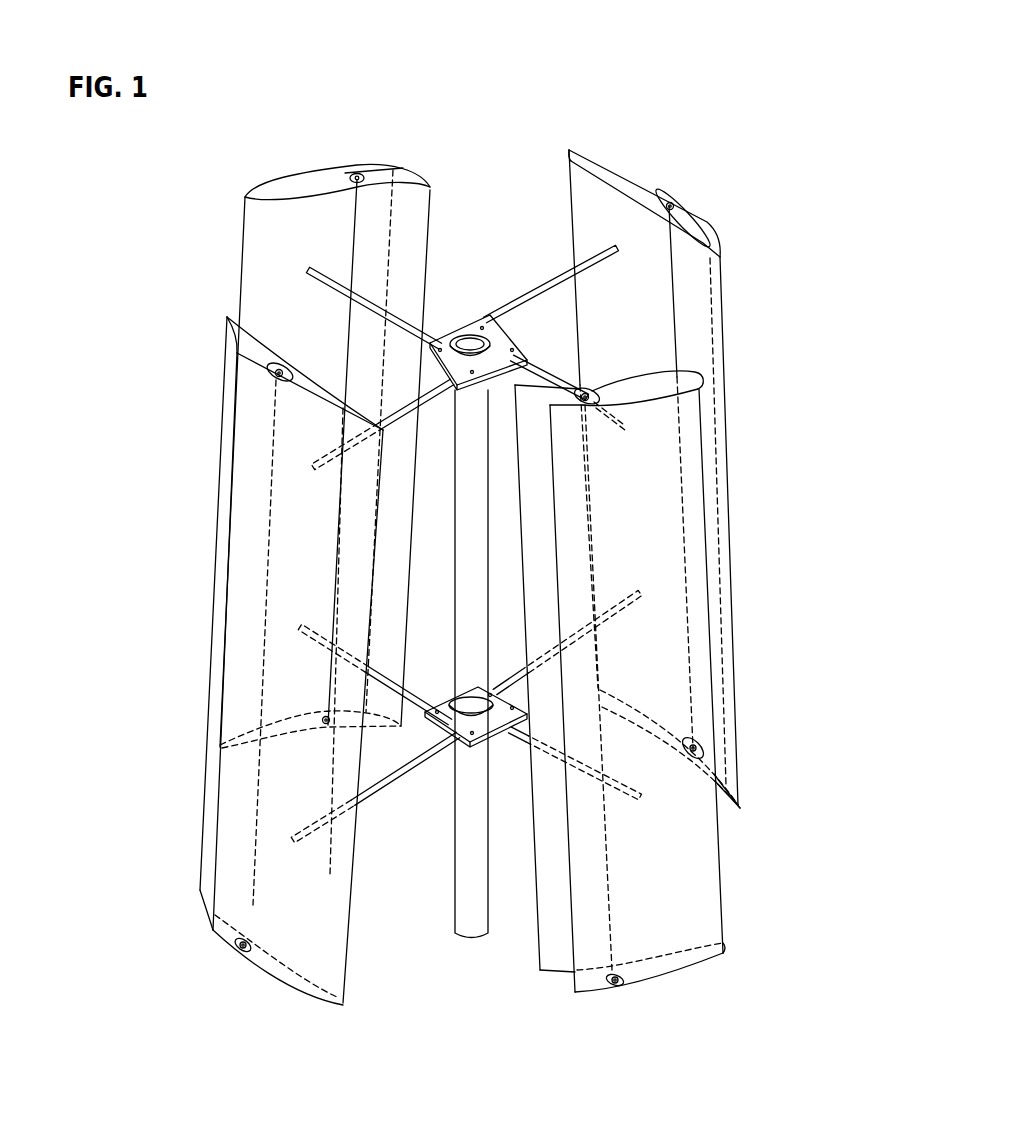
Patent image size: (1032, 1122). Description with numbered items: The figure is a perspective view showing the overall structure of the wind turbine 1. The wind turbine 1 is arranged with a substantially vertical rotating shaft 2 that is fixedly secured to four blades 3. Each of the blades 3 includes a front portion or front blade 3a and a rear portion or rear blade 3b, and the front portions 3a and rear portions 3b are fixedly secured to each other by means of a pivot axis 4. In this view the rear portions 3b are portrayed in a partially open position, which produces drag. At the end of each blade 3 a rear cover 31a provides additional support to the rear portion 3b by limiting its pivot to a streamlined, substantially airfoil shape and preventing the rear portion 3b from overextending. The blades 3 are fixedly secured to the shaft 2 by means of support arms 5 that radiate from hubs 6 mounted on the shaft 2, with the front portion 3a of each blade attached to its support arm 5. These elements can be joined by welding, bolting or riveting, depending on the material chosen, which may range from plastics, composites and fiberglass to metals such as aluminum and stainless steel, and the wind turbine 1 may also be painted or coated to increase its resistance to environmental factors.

The wind turbine 1 is at (507, 138).
The rotating shaft 2 is at (457, 896).
The blade 3 is at (490, 597).
The front portion 3a is at (265, 236).
The rear portion 3b is at (410, 238).
The rear cover 31a is at (388, 164).
The pivot axis 4 is at (357, 172).
The support arm 5 is at (543, 288).
The hub 6 is at (497, 365).